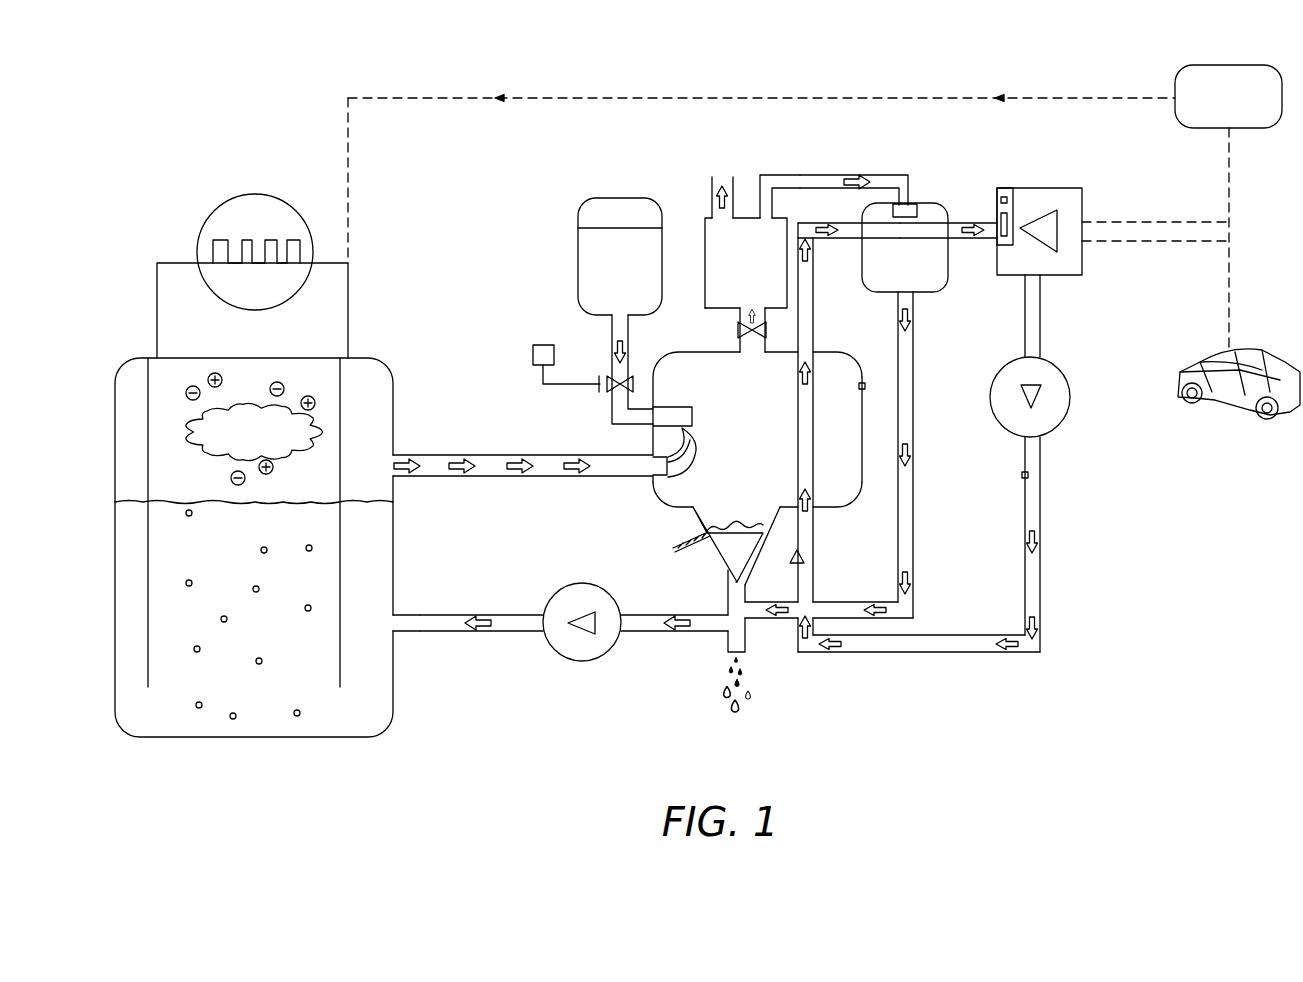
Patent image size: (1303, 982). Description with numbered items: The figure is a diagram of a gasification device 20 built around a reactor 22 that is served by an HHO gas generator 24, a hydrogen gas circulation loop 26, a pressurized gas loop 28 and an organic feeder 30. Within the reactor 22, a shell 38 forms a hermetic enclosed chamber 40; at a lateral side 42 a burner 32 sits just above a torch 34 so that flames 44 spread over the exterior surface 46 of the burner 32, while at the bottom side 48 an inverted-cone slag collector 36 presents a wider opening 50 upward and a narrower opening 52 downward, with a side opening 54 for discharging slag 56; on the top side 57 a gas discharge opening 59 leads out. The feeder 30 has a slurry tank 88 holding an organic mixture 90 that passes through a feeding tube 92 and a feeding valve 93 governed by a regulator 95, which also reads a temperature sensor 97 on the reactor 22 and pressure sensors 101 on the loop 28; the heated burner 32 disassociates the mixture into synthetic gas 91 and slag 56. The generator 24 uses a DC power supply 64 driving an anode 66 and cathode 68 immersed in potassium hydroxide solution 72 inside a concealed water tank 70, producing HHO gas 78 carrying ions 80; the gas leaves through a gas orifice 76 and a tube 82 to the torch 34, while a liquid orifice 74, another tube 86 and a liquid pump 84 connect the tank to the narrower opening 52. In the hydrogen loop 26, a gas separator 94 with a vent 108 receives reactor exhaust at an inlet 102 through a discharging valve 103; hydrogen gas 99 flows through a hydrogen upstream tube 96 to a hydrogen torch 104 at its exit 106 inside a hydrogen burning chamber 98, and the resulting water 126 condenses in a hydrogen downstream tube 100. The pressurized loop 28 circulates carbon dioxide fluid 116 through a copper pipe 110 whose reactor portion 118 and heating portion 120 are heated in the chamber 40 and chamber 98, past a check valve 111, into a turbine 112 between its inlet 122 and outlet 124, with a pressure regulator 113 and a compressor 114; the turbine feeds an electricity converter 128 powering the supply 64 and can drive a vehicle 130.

The gasification device 20 is at (192, 95).
The reactor 22 is at (749, 429).
The HHO gas generator 24 is at (233, 459).
The hydrogen gas circulation loop 26 is at (855, 168).
The pressurized gas loop 28 is at (1062, 544).
The organic feeder 30 is at (595, 232).
The burner 32 is at (680, 401).
The torch 34 is at (655, 471).
The slag collector 36 is at (719, 546).
The shell 38 is at (862, 360).
The enclosed chamber 40 is at (741, 439).
The lateral side 42 is at (652, 385).
The flames 44 is at (665, 446).
The exterior surface 46 is at (677, 366).
The bottom side 48 is at (767, 529).
The wider opening 50 is at (778, 512).
The narrower opening 52 is at (739, 590).
The side opening 54 is at (695, 533).
The slag 56 is at (726, 556).
The top side 57 is at (717, 353).
The gas discharge opening 59 is at (726, 351).
The DC power supply 64 is at (245, 240).
The anode 66 is at (157, 293).
The cathode 68 is at (348, 293).
The concealed water tank 70 is at (115, 440).
The potassium hydroxide solution 72 is at (242, 643).
The HHO gas 78 is at (254, 429).
The ions 80 is at (226, 443).
The liquid orifice 74 is at (395, 632).
The gas orifice 76 is at (393, 455).
The tube 82 is at (533, 477).
The liquid pump 84 is at (582, 661).
The tube 86 is at (478, 632).
The slurry tank 88 is at (621, 198).
The organic mixture 90 is at (609, 273).
The synthetic gas 91 is at (735, 274).
The feeding tube 92 is at (612, 348).
The feeding valve 93 is at (600, 386).
The gas separator 94 is at (730, 251).
The regulator 95 is at (543, 345).
The hydrogen upstream tube 96 is at (790, 175).
The temperature sensor 97 is at (870, 396).
The hydrogen burning chamber 98 is at (894, 273).
The hydrogen gas 99 is at (905, 175).
The hydrogen downstream tube 100 is at (913, 400).
The pressure sensors 101 is at (1049, 475).
The inlet 102 is at (766, 337).
The discharging valve 103 is at (732, 307).
The hydrogen torch 104 is at (938, 189).
The exit 106 is at (912, 205).
The vent 108 is at (724, 177).
The copper pipe 110 is at (885, 652).
The check valve 111 is at (782, 568).
The turbine 112 is at (1027, 206).
The pressure regulator 113 is at (1000, 188).
The compressor 114 is at (1070, 398).
The carbon dioxide fluid 116 is at (935, 652).
The reactor portion 118 is at (813, 309).
The heating portion 120 is at (847, 238).
The inlet 122 is at (982, 238).
The outlet 124 is at (1025, 280).
The water 126 is at (757, 698).
The electricity converter 128 is at (1253, 128).
The vehicle 130 is at (1272, 372).